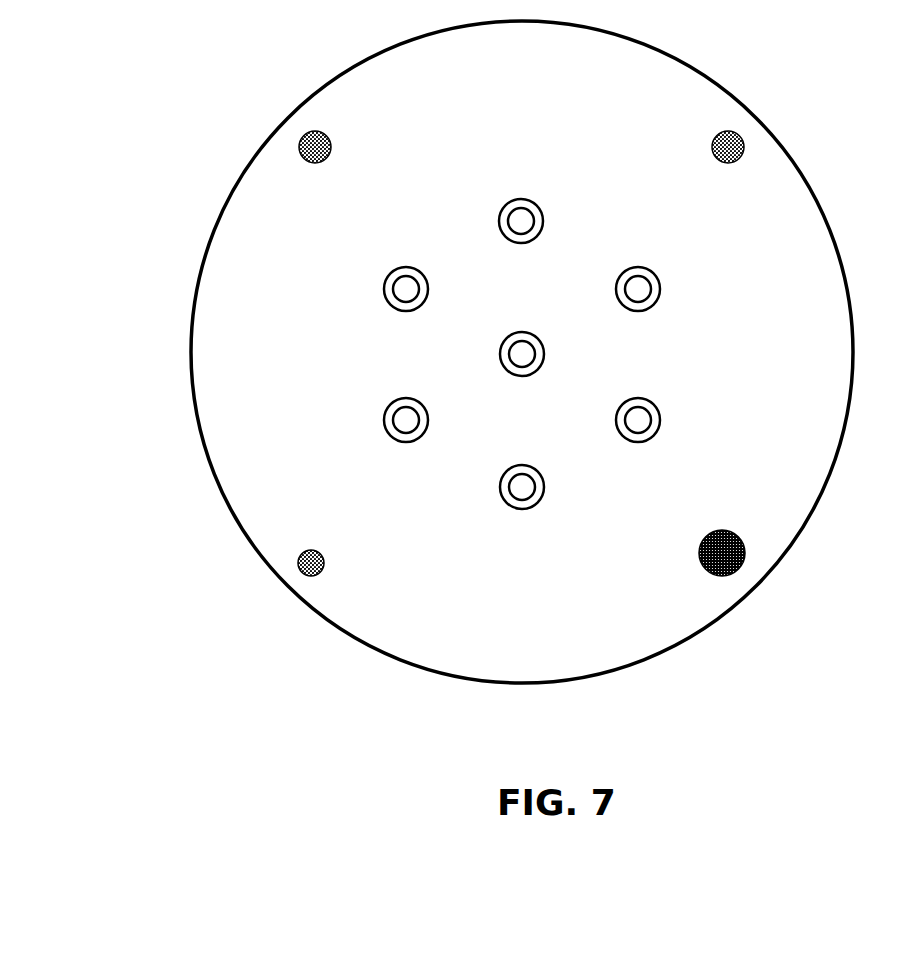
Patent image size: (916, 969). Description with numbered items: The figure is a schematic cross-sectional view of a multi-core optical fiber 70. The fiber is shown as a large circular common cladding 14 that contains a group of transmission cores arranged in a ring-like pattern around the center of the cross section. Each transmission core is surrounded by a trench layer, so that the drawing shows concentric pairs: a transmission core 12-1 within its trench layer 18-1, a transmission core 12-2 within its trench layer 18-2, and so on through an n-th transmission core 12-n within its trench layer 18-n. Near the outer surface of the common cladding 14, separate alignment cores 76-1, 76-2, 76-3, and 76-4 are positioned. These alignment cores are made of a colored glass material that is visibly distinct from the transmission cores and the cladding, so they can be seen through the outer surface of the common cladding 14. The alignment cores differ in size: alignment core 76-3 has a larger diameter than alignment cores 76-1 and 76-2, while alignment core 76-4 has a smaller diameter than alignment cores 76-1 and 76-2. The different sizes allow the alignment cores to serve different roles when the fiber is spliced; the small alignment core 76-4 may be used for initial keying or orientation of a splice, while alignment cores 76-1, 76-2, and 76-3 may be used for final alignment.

The multi-core optical fiber 70 is at (262, 90).
The common cladding 14 is at (797, 270).
The trench layer 18-1 is at (387, 428).
The transmission core 12-1 is at (400, 424).
The trench layer 18-2 is at (506, 505).
The transmission core 12-2 is at (513, 498).
The trench layer 18-n is at (660, 418).
The transmission core 12-n is at (650, 424).
The alignment core 76-1 is at (300, 150).
The alignment core 76-2 is at (727, 132).
The alignment core 76-3 is at (733, 574).
The alignment core 76-4 is at (312, 577).